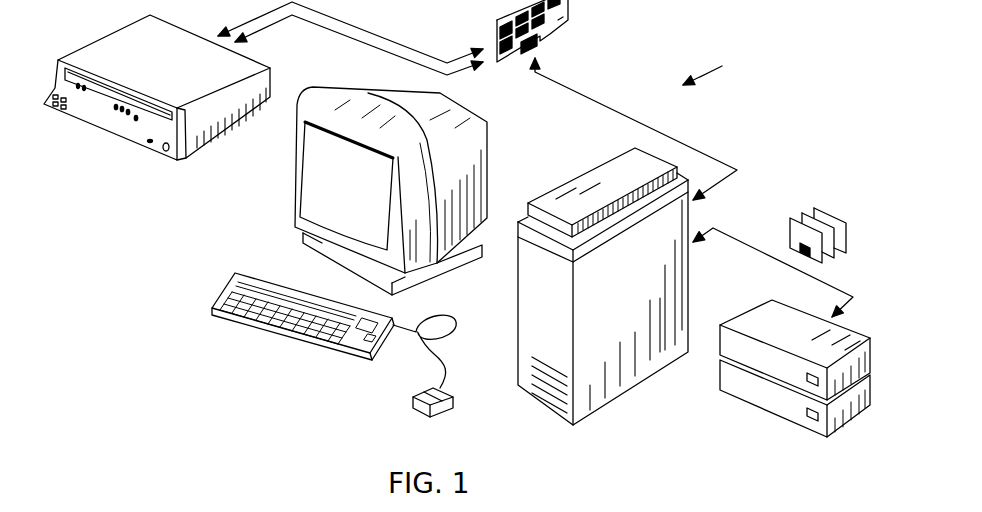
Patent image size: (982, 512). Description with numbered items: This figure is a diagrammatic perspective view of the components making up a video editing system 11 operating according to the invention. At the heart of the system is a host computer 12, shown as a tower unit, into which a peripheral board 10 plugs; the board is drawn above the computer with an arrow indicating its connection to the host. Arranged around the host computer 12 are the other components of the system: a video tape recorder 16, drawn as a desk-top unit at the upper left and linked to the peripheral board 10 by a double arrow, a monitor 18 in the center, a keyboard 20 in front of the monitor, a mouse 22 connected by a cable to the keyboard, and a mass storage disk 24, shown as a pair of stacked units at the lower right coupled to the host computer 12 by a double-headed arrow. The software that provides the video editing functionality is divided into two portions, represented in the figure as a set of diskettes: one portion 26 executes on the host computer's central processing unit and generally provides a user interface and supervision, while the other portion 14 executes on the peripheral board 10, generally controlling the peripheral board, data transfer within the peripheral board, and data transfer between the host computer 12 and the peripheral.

The peripheral board 10 is at (568, 5).
The video editing system 11 is at (714, 65).
The host computer 12 is at (650, 328).
The software portion 14 is at (794, 215).
The video tape recorder 16 is at (183, 80).
The monitor 18 is at (356, 206).
The keyboard 20 is at (265, 328).
The mouse 22 is at (457, 402).
The mass storage disk 24 is at (805, 341).
The software portion 26 is at (818, 222).